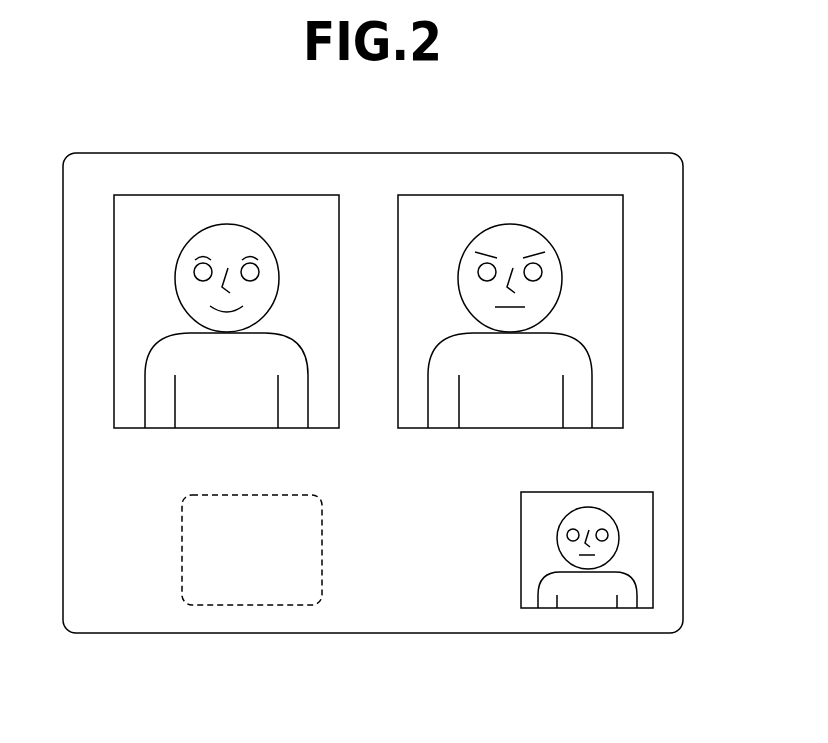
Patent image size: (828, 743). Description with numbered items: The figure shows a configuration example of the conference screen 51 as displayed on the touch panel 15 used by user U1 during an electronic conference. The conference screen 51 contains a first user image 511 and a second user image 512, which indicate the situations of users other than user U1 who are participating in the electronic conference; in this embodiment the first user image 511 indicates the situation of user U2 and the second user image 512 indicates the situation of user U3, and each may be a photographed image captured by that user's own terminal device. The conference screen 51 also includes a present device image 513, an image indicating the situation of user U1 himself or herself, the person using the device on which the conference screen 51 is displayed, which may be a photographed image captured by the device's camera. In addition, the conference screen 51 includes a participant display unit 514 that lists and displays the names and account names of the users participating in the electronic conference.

The touch panel 15 is at (253, 153).
The conference screen 51 is at (320, 167).
The first user image 511 is at (172, 195).
The second user image 512 is at (528, 196).
The present device image 513 is at (533, 608).
The participant display unit 514 is at (260, 608).